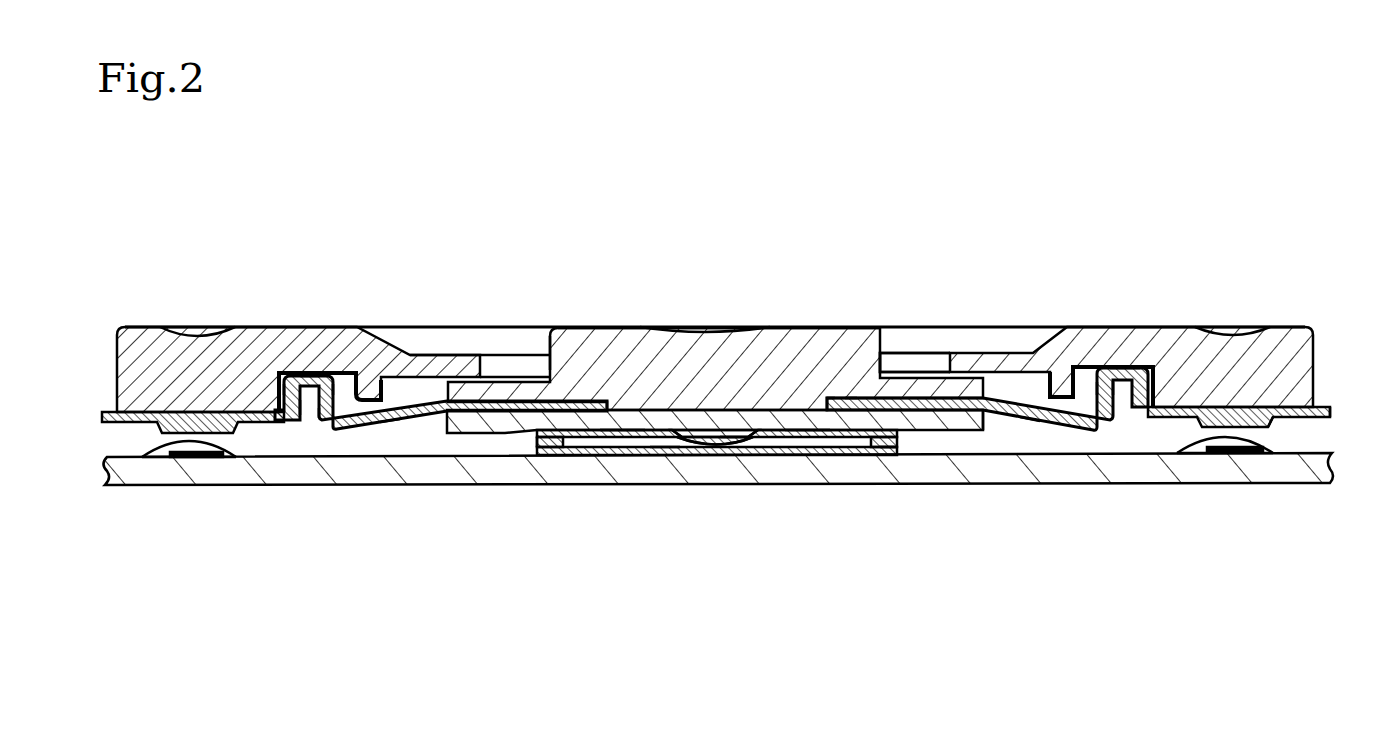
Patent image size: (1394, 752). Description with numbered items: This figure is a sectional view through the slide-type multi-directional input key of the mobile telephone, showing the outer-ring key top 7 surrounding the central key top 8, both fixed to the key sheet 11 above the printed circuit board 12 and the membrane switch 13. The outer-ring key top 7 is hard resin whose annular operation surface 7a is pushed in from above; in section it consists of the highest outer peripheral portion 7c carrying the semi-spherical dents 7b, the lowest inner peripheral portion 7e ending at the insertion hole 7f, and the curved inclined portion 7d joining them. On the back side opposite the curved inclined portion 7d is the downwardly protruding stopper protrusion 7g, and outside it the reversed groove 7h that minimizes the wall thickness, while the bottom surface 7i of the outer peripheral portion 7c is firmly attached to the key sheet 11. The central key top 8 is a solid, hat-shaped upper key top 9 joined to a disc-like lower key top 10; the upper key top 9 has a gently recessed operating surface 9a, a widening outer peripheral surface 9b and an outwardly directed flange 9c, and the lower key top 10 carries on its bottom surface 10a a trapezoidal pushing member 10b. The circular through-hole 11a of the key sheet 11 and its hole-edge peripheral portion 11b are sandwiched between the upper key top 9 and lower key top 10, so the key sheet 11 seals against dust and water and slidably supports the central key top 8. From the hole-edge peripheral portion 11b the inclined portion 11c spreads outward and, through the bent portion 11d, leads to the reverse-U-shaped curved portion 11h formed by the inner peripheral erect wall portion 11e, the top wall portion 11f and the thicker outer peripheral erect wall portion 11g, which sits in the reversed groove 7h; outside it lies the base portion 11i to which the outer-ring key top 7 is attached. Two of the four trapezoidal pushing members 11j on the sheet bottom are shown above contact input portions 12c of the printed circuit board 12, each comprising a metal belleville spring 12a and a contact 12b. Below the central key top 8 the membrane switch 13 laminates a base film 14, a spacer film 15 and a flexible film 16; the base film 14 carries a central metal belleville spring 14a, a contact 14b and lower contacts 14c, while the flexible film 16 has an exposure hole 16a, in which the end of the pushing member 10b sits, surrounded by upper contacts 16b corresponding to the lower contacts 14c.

The outer-ring key top 7 is at (1158, 352).
The annular operation surface 7a is at (1108, 227).
The semi-spherical dents 7b is at (1238, 332).
The outer peripheral portion 7c is at (1117, 368).
The curved inclined portion 7d is at (1055, 384).
The inner peripheral portion 7e is at (1028, 372).
The insertion hole 7f is at (948, 353).
The stopper protrusion 7g is at (1045, 420).
The reversed groove 7h is at (298, 426).
The bottom surface 7i is at (1280, 424).
The central key top 8 is at (795, 194).
The upper key top 9 is at (770, 350).
The operating surface 9a is at (607, 335).
The outer peripheral surface 9b is at (553, 342).
The outwardly directed flange 9c is at (497, 362).
The lower key top 10 is at (738, 420).
The bottom surface 10a is at (965, 432).
The pushing member 10b is at (750, 440).
The key sheet 11 is at (218, 334).
The through-hole 11a is at (809, 398).
The hole-edge peripheral portion 11b is at (850, 398).
The inclined portion 11c is at (392, 423).
The bent portion 11d is at (326, 430).
The inner peripheral erect wall portion 11e is at (338, 376).
The top wall portion 11f is at (312, 375).
The outer peripheral erect wall portion 11g is at (289, 374).
The curved portion 11h is at (392, 256).
The base portion 11i is at (1276, 406).
The pushing members 11j is at (150, 432).
The printed circuit board 12 is at (1100, 453).
The metal belleville spring 12a is at (143, 458).
The contact 12b is at (200, 458).
The contact input portions 12c is at (240, 567).
The membrane switch 13 is at (532, 447).
The base film 14 is at (895, 434).
The metal belleville spring 14a is at (678, 445).
The contact 14b is at (722, 445).
The lower contacts 14c is at (627, 438).
The spacer film 15 is at (897, 455).
The flexible film 16 is at (545, 450).
The exposure hole 16a is at (662, 440).
The upper contacts 16b is at (605, 445).